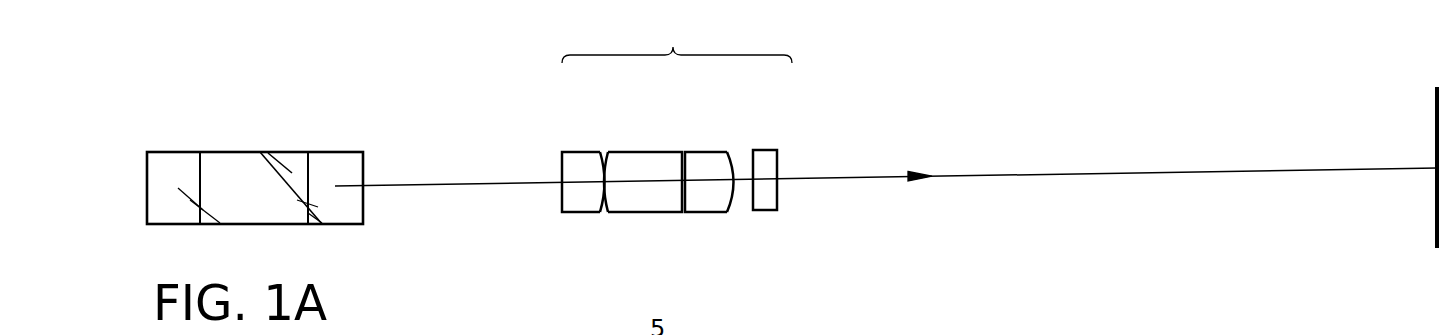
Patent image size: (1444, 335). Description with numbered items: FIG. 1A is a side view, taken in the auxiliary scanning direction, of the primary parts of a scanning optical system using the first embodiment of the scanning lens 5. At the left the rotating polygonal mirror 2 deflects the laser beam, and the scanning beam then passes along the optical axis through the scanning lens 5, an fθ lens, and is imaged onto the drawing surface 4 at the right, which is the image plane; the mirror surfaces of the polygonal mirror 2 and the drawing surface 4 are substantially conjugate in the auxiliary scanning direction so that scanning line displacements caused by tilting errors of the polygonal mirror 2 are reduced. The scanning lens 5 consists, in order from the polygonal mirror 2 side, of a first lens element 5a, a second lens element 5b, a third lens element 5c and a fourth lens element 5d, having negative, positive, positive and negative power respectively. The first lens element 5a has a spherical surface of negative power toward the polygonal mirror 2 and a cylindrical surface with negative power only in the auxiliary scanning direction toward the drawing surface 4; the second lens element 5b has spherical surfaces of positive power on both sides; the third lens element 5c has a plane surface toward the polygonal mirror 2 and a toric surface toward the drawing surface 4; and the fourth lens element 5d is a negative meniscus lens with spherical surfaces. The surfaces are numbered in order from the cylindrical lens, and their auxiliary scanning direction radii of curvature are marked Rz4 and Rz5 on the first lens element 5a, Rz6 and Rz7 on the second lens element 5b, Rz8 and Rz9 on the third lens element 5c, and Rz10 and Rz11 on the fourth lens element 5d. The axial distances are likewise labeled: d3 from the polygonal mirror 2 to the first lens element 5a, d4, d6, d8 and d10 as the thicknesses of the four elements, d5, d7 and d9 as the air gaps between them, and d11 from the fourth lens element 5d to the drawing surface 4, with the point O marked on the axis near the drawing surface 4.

The rotating polygonal mirror 2 is at (280, 130).
The scanning lens 5 is at (677, 113).
The first lens element 5a is at (578, 152).
The second lens element 5b is at (661, 152).
The third lens element 5c is at (706, 152).
The fourth lens element 5d is at (773, 150).
The distance d3 is at (463, 165).
The distance d4 is at (580, 181).
The distance d5 is at (600, 175).
The distance d6 is at (640, 180).
The distance d7 is at (682, 180).
The distance d8 is at (710, 178).
The distance d9 is at (750, 178).
The distance d10 is at (776, 172).
The distance d11 is at (1087, 150).
The radius of curvature Rz4 is at (562, 203).
The radius of curvature Rz5 is at (600, 212).
The radius of curvature Rz6 is at (607, 212).
The radius of curvature Rz7 is at (681, 212).
The radius of curvature Rz8 is at (685, 208).
The radius of curvature Rz9 is at (738, 198).
The radius of curvature Rz10 is at (753, 207).
The radius of curvature Rz11 is at (778, 200).
The optical axis point / object point O is at (1240, 160).
The drawing surface 4 is at (1435, 127).